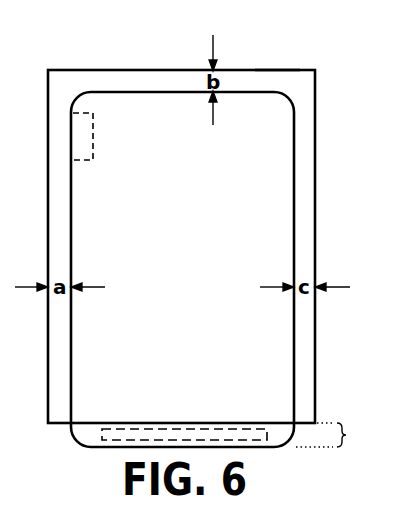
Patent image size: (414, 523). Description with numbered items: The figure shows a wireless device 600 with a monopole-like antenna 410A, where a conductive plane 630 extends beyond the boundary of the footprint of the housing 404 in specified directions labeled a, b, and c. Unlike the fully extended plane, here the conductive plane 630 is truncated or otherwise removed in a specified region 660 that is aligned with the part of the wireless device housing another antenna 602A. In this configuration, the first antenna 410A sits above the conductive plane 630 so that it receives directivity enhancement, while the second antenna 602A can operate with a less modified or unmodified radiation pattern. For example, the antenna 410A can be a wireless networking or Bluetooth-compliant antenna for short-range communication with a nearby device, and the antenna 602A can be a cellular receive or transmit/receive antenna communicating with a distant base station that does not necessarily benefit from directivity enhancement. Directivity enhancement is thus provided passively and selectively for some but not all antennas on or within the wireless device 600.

The housing 404 is at (127, 92).
The conductive plane 630 is at (268, 70).
The wireless device 600 is at (173, 238).
The monopole-like antenna 410A is at (80, 160).
The antenna 602A is at (145, 429).
The specified region 660 is at (340, 436).